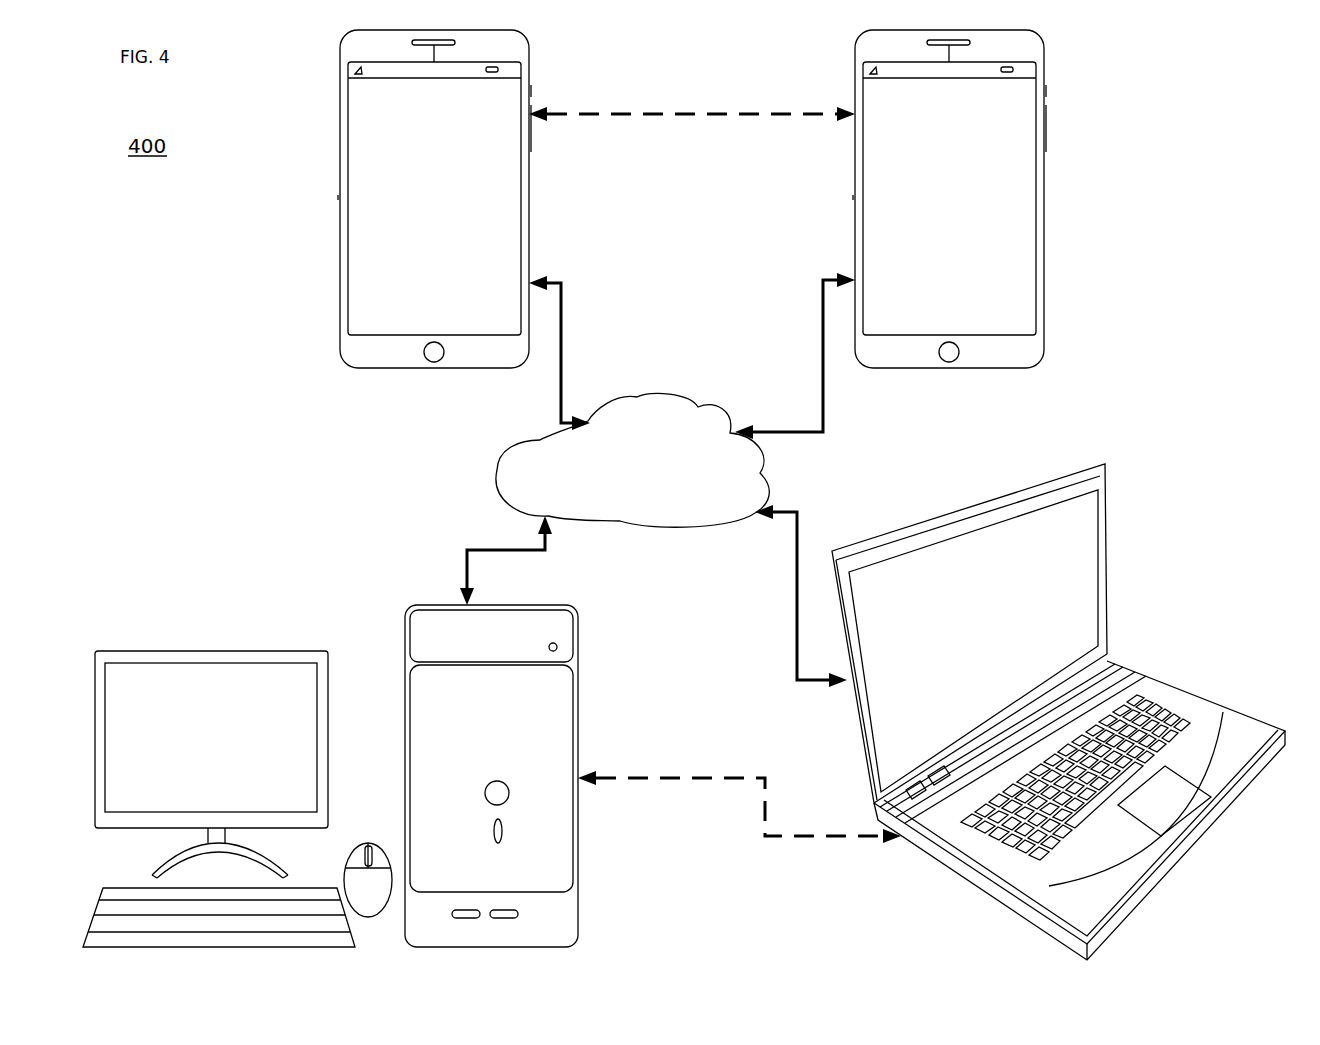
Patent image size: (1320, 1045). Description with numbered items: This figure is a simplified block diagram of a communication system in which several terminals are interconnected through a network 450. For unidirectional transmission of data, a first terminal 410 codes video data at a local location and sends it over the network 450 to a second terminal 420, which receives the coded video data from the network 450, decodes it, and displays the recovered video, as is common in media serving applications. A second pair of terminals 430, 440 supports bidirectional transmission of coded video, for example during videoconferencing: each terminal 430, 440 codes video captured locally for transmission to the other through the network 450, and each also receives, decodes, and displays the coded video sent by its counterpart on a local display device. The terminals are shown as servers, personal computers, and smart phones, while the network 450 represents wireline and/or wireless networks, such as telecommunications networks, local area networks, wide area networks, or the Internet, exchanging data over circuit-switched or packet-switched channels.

The first terminal 410 is at (1108, 550).
The second terminal 420 is at (577, 898).
The terminal 430 is at (340, 142).
The terminal 440 is at (855, 140).
The network 450 is at (632, 460).